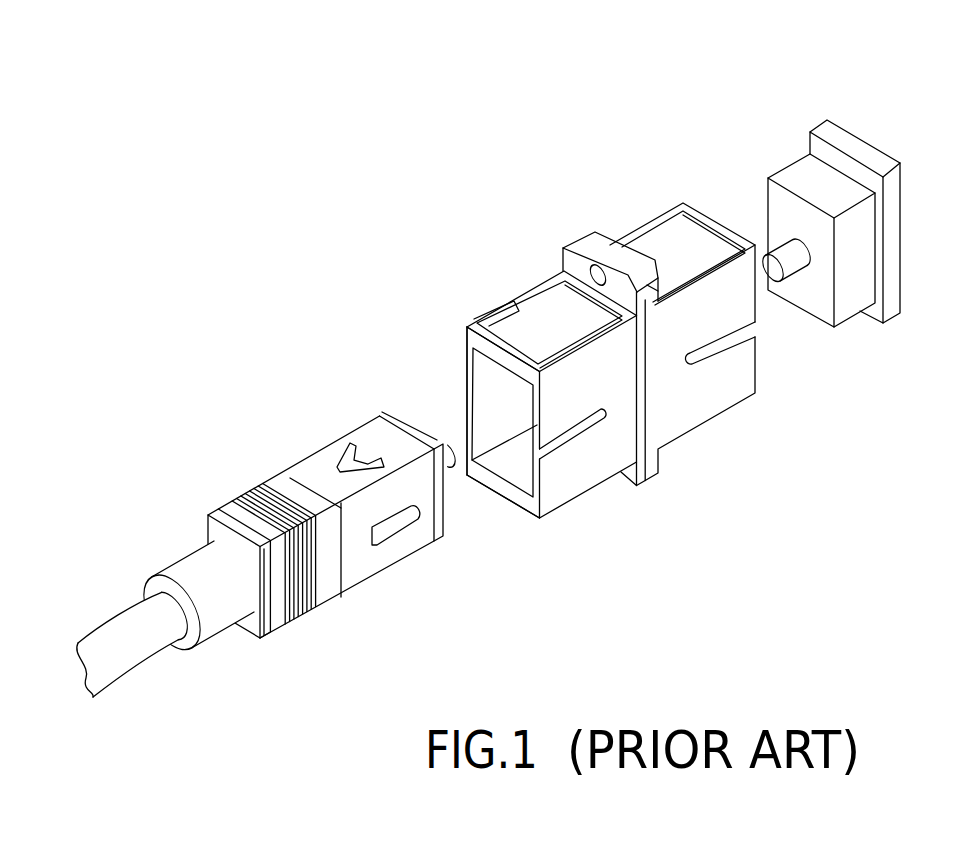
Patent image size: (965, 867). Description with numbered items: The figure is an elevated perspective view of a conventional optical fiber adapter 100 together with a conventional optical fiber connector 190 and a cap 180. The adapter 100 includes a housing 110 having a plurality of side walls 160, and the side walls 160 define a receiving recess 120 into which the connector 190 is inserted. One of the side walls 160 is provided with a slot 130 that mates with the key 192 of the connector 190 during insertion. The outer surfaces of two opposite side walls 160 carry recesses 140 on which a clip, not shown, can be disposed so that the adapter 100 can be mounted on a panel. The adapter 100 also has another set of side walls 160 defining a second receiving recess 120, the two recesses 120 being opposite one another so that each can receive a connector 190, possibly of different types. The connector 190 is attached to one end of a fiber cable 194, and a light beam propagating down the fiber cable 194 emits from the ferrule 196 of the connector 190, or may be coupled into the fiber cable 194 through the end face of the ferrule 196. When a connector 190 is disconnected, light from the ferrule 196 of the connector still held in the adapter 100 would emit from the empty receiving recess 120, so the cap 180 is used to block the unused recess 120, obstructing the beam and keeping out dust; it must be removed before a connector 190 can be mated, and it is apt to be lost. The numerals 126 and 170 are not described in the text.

The fiber adapter 100 is at (523, 151).
The housing 110 is at (457, 292).
The receiving recess 120 is at (518, 447).
The top wall 126 is at (474, 340).
The slot 130 is at (583, 420).
The recess 140 is at (557, 302).
The side wall 160 is at (723, 222).
The mounting hole 170 is at (515, 284).
The cap 180 is at (888, 131).
The connector 190 is at (236, 448).
The key 192 is at (393, 530).
The fiber cable 194 is at (137, 628).
The ferrule 196 is at (443, 442).